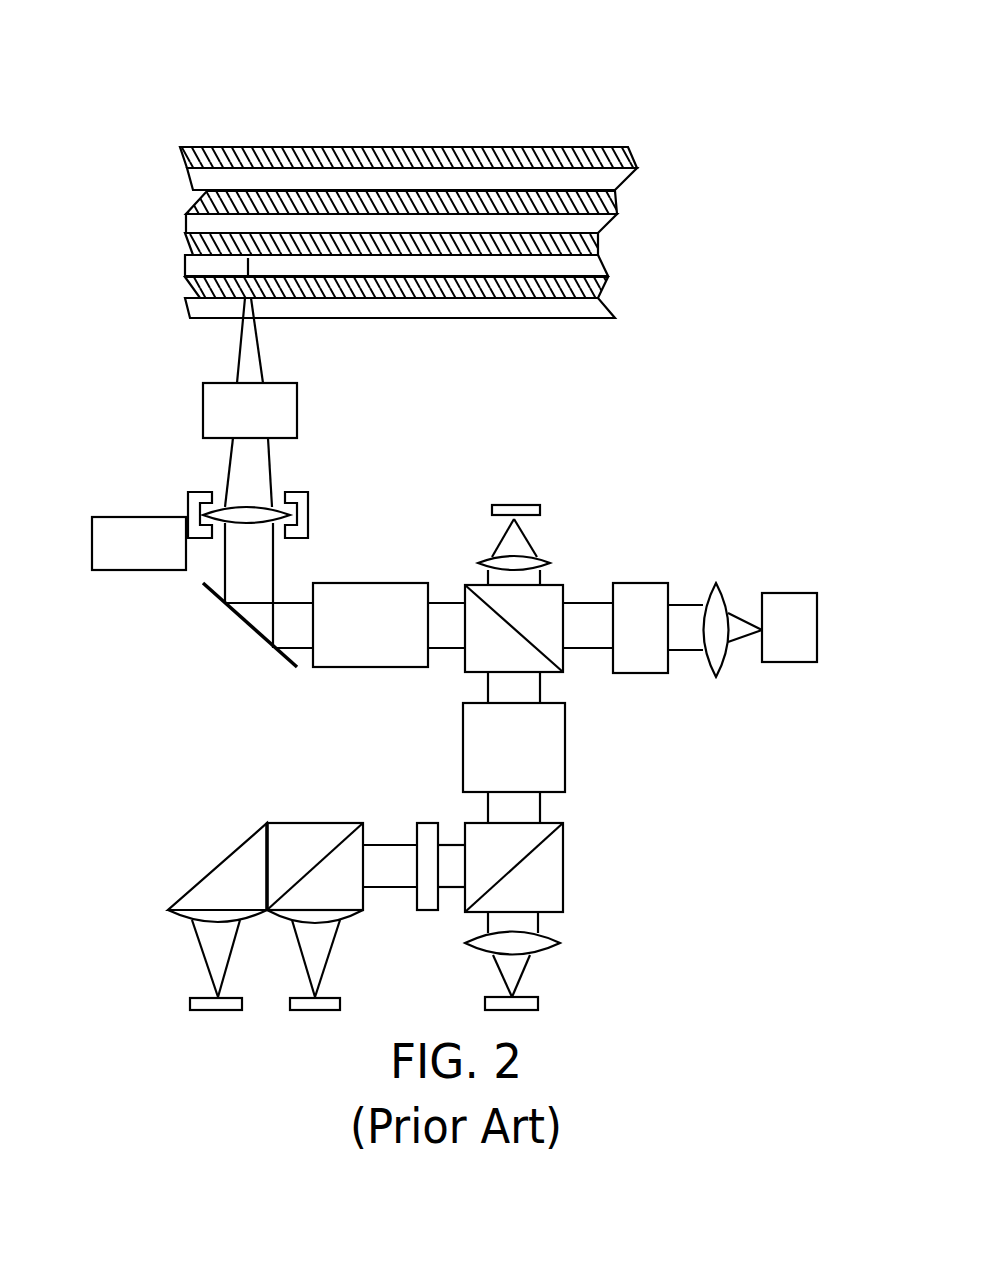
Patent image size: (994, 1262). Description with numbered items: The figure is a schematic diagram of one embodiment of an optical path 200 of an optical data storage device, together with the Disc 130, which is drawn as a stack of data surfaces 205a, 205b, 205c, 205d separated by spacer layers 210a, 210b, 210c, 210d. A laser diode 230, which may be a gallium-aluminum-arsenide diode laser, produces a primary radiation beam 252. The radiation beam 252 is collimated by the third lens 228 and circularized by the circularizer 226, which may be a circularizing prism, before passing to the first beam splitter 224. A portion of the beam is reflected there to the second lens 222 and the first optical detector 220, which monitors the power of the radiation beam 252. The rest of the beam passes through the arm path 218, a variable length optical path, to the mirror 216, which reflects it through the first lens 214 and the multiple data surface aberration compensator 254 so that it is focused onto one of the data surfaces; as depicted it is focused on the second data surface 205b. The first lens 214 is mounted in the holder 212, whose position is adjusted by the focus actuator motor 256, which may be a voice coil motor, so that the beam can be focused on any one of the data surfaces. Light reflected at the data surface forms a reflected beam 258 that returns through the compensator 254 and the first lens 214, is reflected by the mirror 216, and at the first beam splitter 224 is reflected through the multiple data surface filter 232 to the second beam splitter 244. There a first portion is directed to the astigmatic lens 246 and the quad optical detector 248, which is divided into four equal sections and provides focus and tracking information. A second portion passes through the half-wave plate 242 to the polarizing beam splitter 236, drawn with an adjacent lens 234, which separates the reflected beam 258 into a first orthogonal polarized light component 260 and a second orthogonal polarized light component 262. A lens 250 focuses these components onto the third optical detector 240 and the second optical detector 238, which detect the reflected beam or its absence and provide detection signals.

The optical path 200 is at (95, 64).
The Disc 130 is at (541, 147).
The data surface 205a is at (608, 287).
The second data surface 205b is at (600, 243).
The data surface 205c is at (620, 203).
The data surface 205d is at (637, 158).
The spacer layer 210a is at (185, 302).
The spacer layer 210b is at (185, 262).
The spacer layer 210c is at (186, 213).
The spacer layer 210d is at (193, 190).
The holder 212 is at (190, 497).
The first lens 214 is at (262, 503).
The mirror 216 is at (236, 613).
The arm path 218 is at (372, 667).
The first optical detector 220 is at (493, 505).
The second lens 222 is at (482, 560).
The first beam splitter 224 is at (565, 585).
The circularizer 226 is at (642, 583).
The third lens 228 is at (720, 586).
The laser diode 230 is at (818, 595).
The multiple data surface filter 232 is at (565, 732).
The lens 234 is at (168, 913).
The polarizing beam splitter 236 is at (320, 823).
The second optical detector 238 is at (213, 1012).
The third optical detector 240 is at (308, 1012).
The half-wave plate 242 is at (430, 822).
The second beam splitter 244 is at (563, 856).
The astigmatic lens 246 is at (560, 942).
The quad optical detector 248 is at (540, 995).
The lens 250 is at (350, 916).
The radiation beam 252 is at (730, 648).
The multiple data surface aberration compensator 254 is at (203, 412).
The focus actuator motor 256 is at (92, 545).
The reflected beam 258 is at (490, 685).
The first orthogonal polarized light component 260 is at (328, 970).
The second orthogonal polarized light component 262 is at (203, 965).